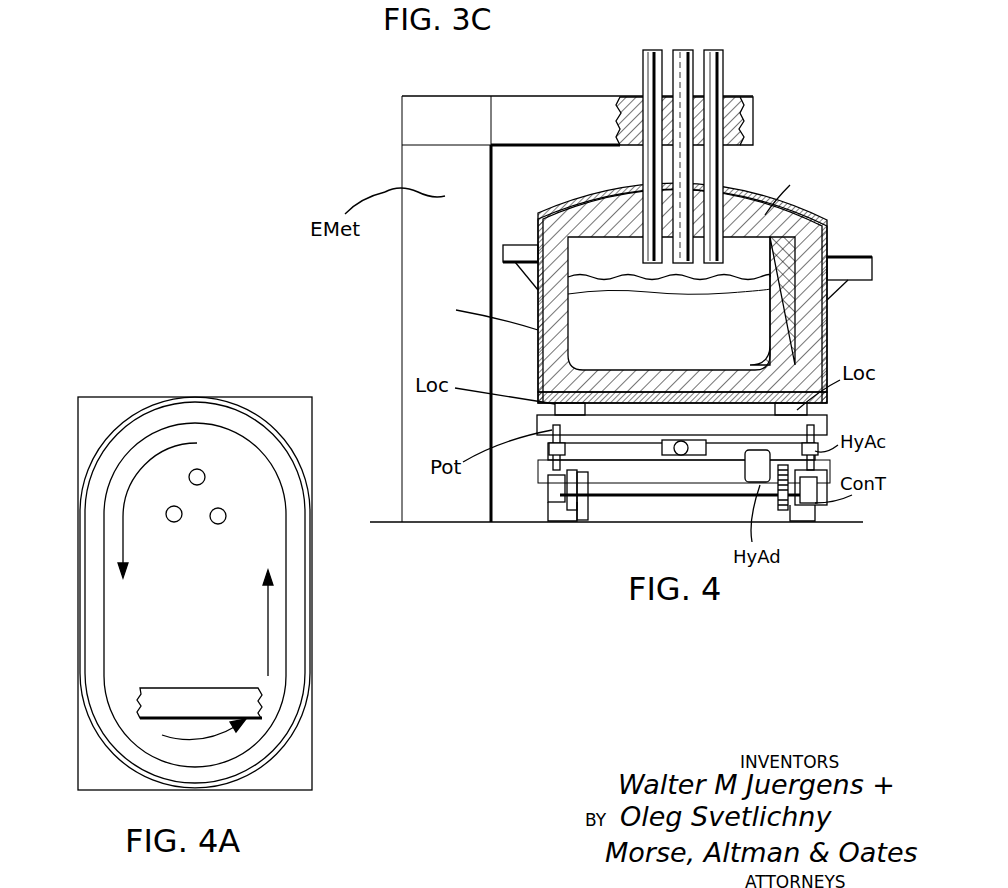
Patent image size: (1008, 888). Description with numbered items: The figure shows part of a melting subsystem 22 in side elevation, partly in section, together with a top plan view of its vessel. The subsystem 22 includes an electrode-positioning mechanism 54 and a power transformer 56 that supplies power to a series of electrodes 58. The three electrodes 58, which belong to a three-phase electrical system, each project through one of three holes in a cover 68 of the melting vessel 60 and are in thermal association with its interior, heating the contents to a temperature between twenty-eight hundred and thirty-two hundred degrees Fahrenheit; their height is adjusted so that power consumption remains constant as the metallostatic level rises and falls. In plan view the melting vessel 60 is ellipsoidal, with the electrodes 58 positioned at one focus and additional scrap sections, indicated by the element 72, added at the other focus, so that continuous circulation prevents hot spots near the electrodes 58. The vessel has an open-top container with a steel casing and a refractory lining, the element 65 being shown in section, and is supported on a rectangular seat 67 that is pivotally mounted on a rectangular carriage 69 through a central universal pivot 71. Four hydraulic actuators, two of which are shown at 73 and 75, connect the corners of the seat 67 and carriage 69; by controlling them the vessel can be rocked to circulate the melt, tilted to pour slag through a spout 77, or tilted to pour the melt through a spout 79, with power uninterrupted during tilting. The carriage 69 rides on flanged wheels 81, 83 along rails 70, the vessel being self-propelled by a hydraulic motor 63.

In FIG. 4, the melting subsystem 22 is at (370, 129).
In FIG. 4A, the melting subsystem 22 is at (134, 380).
In FIG. 4, the electrode-positioning mechanism 54 is at (565, 117).
In FIG. 4, the power transformer 56 is at (418, 253).
In FIG. 4, the electrodes 58 is at (660, 50).
In FIG. 4A, the electrodes 58 is at (205, 476).
In FIG. 4, the melting vessel 60 is at (647, 264).
In FIG. 4, the hydraulic motor 63 is at (748, 466).
In FIG. 4, the crucible bottom refractory 65 is at (636, 374).
In FIG. 4, the seat 67 is at (622, 418).
In FIG. 4A, the seat 67 is at (104, 483).
In FIG. 4, the cover 68 is at (740, 190).
In FIG. 4, the carriage 69 is at (665, 481).
In FIG. 4, the rails 70 is at (562, 522).
In FIG. 4, the central universal pivot 71 is at (688, 446).
In FIG. 4A, the feed bar 72 is at (175, 705).
In FIG. 4, the hydraulic actuator 73 is at (553, 447).
In FIG. 4, the hydraulic actuator 75 is at (814, 442).
In FIG. 4, the slag spout 77 is at (503, 245).
In FIG. 4, the melt spout 79 is at (770, 303).
In FIG. 4, the flanged wheel 81 is at (582, 505).
In FIG. 4, the flanged wheel 83 is at (785, 500).